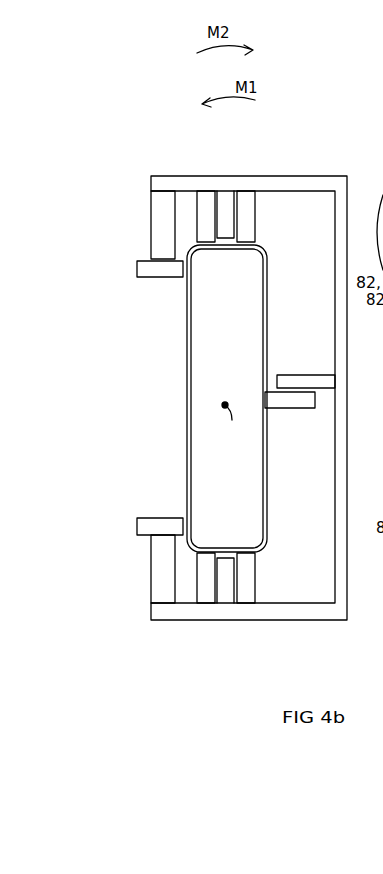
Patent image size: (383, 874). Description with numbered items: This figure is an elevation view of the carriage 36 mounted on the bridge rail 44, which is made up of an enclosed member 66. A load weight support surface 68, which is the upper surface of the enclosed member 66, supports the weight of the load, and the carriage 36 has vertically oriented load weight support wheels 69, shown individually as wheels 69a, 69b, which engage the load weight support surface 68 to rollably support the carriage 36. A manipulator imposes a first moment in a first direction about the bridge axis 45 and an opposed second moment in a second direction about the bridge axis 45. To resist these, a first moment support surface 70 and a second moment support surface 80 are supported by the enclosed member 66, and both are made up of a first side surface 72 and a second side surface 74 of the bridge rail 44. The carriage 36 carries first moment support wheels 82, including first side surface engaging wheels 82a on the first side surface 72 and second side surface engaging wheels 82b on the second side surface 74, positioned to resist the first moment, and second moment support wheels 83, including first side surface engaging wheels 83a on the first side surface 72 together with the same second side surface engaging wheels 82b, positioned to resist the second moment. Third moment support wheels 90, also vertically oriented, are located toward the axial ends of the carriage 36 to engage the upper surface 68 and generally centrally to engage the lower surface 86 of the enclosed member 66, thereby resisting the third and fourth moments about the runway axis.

The carriage 36 is at (317, 620).
The bridge rail 44 is at (158, 398).
The bridge axis 45 is at (241, 423).
The enclosed member 66 is at (187, 422).
The load weight support surface 68 is at (253, 238).
The load weight support wheels 69 is at (206, 192).
The load weight support wheel 69a is at (142, 202).
The load weight support wheel 69b is at (252, 223).
The first moment support surface 70 is at (158, 398).
The first side surface 72 is at (187, 325).
The second side surface 74 is at (184, 398).
The second moment support surface 80 is at (158, 398).
The first moment support wheels 82 is at (199, 353).
The first side surface engaging wheels 82a is at (137, 270).
The second side surface engaging wheels 82b is at (306, 410).
The second moment support wheels 83 is at (298, 408).
The first side surface engaging wheels 83a is at (137, 526).
The lower surface 86 is at (254, 566).
The third moment support wheels 90 is at (194, 407).